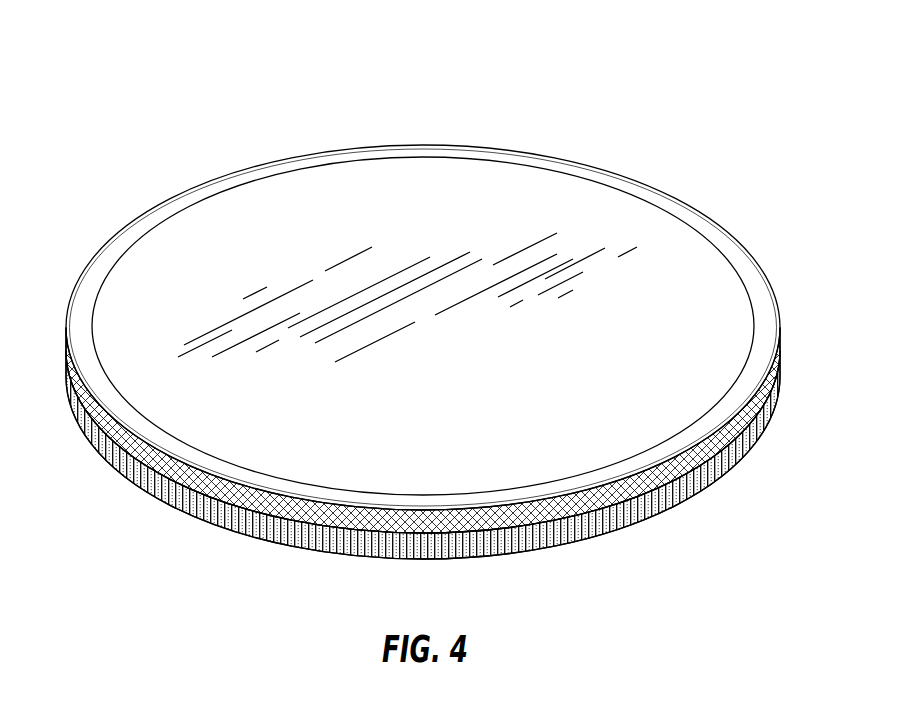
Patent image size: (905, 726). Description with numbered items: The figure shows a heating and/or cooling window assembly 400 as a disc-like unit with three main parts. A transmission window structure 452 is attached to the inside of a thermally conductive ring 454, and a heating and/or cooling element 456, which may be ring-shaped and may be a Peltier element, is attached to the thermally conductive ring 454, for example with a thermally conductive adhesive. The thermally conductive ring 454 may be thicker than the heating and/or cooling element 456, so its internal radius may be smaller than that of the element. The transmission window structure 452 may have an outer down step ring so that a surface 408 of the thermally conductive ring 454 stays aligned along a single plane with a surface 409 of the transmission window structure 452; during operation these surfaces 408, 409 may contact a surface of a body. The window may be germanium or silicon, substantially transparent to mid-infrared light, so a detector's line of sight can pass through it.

The heating and/or cooling window assembly 400 is at (160, 72).
The surface of the thermally conductive ring 408 is at (81, 320).
The surface of the transmission window structure 409 is at (229, 440).
The transmission window structure 452 is at (670, 234).
The thermally conductive ring 454 is at (720, 442).
The heating and/or cooling element 456 is at (563, 548).